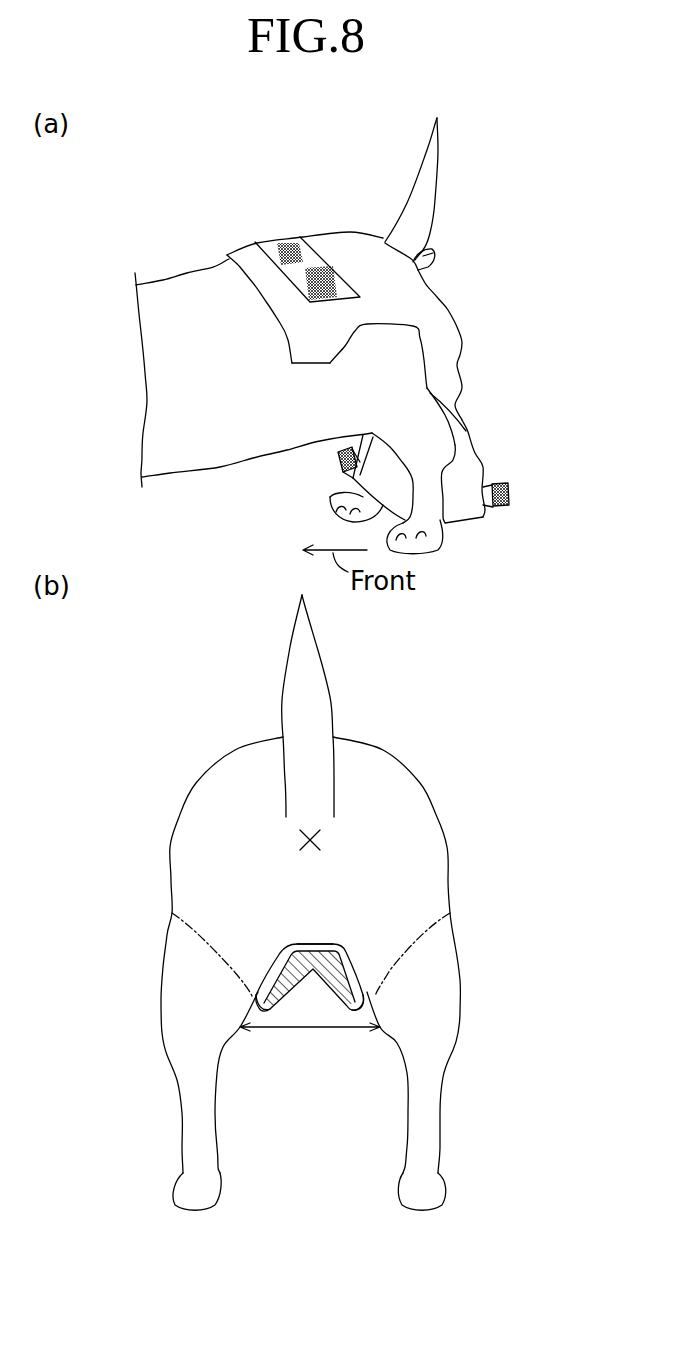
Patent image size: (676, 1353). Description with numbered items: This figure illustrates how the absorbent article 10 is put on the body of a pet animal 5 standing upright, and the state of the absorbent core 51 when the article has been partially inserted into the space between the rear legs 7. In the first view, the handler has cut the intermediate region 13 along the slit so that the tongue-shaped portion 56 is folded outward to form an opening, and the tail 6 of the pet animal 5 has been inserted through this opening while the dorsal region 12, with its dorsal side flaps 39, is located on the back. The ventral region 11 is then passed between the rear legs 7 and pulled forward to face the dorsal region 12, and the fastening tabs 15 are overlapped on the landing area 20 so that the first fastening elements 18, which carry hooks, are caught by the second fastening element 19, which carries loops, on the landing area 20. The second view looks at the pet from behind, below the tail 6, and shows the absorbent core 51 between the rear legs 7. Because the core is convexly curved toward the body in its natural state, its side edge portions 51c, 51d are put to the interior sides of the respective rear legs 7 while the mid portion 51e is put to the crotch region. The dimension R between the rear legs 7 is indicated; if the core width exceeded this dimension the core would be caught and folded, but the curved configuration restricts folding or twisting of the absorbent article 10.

The pet animal 5 is at (178, 289).
The tail 6 is at (430, 177).
The rear legs 7 is at (440, 442).
The absorbent article 10 is at (466, 261).
The ventral region 11 is at (467, 506).
The dorsal region 12 is at (316, 343).
The intermediate region 13 is at (443, 370).
The fastening tabs 15 is at (338, 452).
The first fastening element 18 is at (338, 470).
The second fastening element 19 is at (292, 240).
The landing area 20 is at (259, 261).
The dorsal side flaps 39 is at (308, 352).
The absorbent core 51 is at (347, 963).
The side edge portion 51c is at (258, 994).
The side edge portion 51d is at (362, 994).
The mid portion 51e is at (310, 945).
The tongue-shaped portion 56 is at (435, 263).
The dimension between the rear legs R is at (310, 1030).